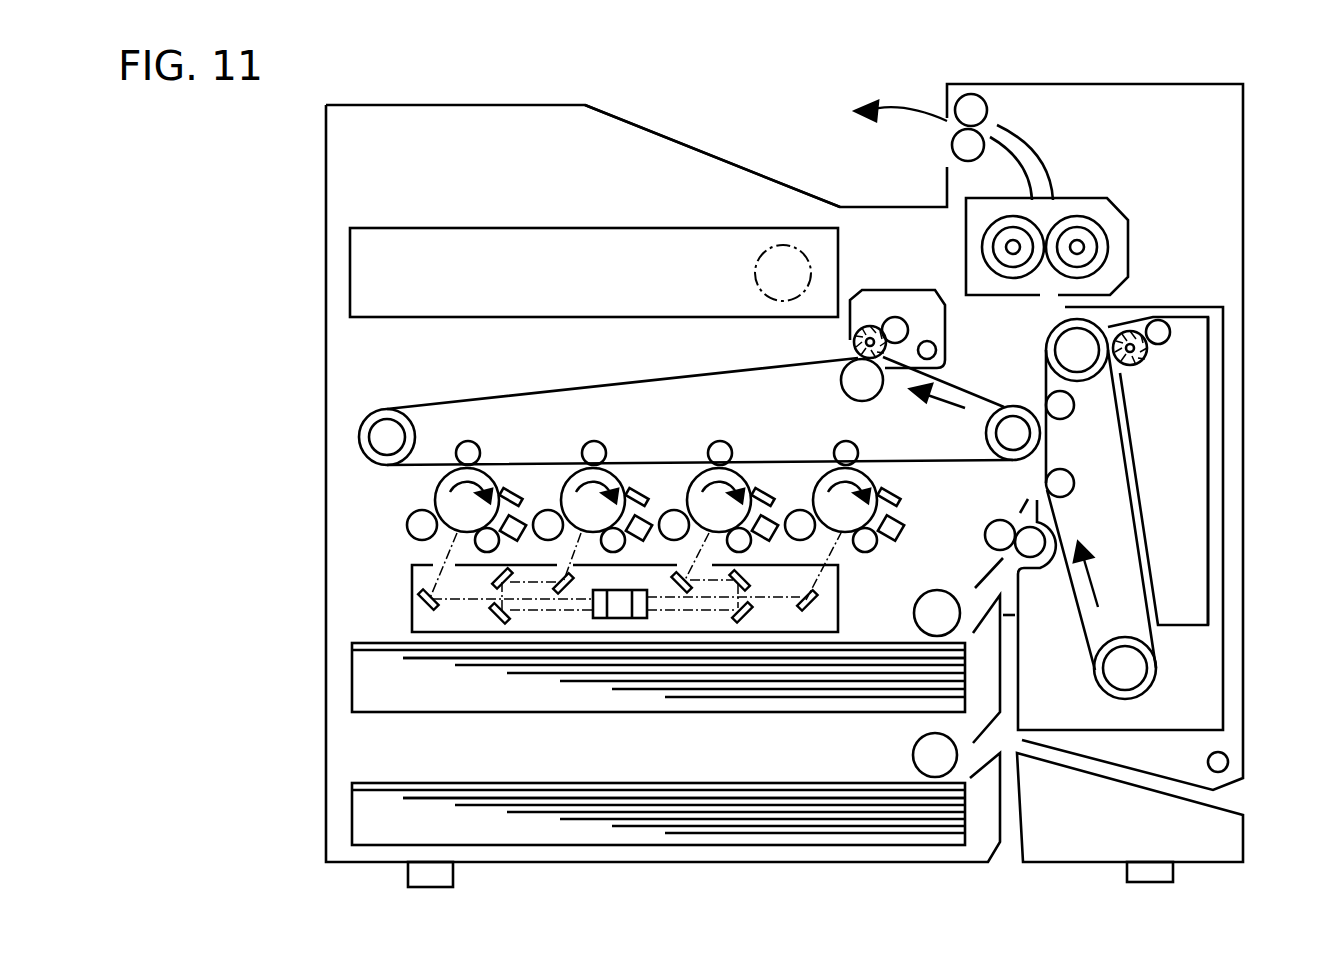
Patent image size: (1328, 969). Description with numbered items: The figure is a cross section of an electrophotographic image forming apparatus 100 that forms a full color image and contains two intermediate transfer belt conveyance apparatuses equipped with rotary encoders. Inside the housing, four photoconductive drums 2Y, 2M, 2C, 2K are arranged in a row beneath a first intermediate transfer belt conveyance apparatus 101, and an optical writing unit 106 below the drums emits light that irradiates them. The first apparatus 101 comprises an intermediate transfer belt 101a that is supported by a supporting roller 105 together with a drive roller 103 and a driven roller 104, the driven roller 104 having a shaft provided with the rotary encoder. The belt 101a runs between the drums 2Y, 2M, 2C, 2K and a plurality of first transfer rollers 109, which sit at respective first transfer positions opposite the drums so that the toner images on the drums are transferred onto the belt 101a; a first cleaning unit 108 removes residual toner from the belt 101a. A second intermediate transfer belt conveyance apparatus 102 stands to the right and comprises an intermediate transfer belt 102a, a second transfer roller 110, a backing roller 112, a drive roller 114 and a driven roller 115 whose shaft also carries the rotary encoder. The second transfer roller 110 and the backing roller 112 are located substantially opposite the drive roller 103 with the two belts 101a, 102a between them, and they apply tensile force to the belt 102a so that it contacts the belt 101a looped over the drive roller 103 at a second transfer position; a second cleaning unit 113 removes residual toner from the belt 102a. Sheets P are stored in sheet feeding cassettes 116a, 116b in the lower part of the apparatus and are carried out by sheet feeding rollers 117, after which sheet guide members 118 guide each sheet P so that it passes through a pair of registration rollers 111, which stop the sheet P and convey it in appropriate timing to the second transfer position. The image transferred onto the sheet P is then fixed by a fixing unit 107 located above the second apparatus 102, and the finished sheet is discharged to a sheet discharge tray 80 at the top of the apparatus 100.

The image forming apparatus 100 is at (1256, 510).
The sheet discharge tray 80 is at (700, 152).
The fixing unit 107 is at (1122, 196).
The first cleaning unit 108 is at (886, 314).
The first intermediate transfer belt conveyance apparatus 101 is at (495, 380).
The intermediate transfer belt 101a is at (570, 388).
The supporting roller 105 is at (384, 412).
The driven roller 104 is at (845, 386).
The drive roller 103 is at (1020, 408).
The photoconductive drum 2Y is at (437, 490).
The photoconductive drum 2M is at (563, 490).
The photoconductive drum 2C is at (689, 490).
The photoconductive drum 2K is at (816, 490).
The first transfer rollers 109 is at (480, 450).
The optical writing unit 106 is at (840, 586).
The sheet feeding cassette 116a is at (352, 680).
The sheet feeding cassette 116b is at (352, 810).
The sheet P is at (880, 645).
The sheet feeding roller 117 is at (938, 592).
The pair of registration rollers 111 is at (986, 534).
The sheet guide members 118 is at (1021, 512).
The second intermediate transfer belt conveyance apparatus 102 is at (1072, 666).
The intermediate transfer belt 102a is at (1160, 633).
The driven roller 115 is at (1047, 340).
The drive roller 114 is at (1155, 682).
The second cleaning unit 113 is at (1146, 375).
The second transfer roller 110 is at (1060, 418).
The backing roller 112 is at (1060, 496).